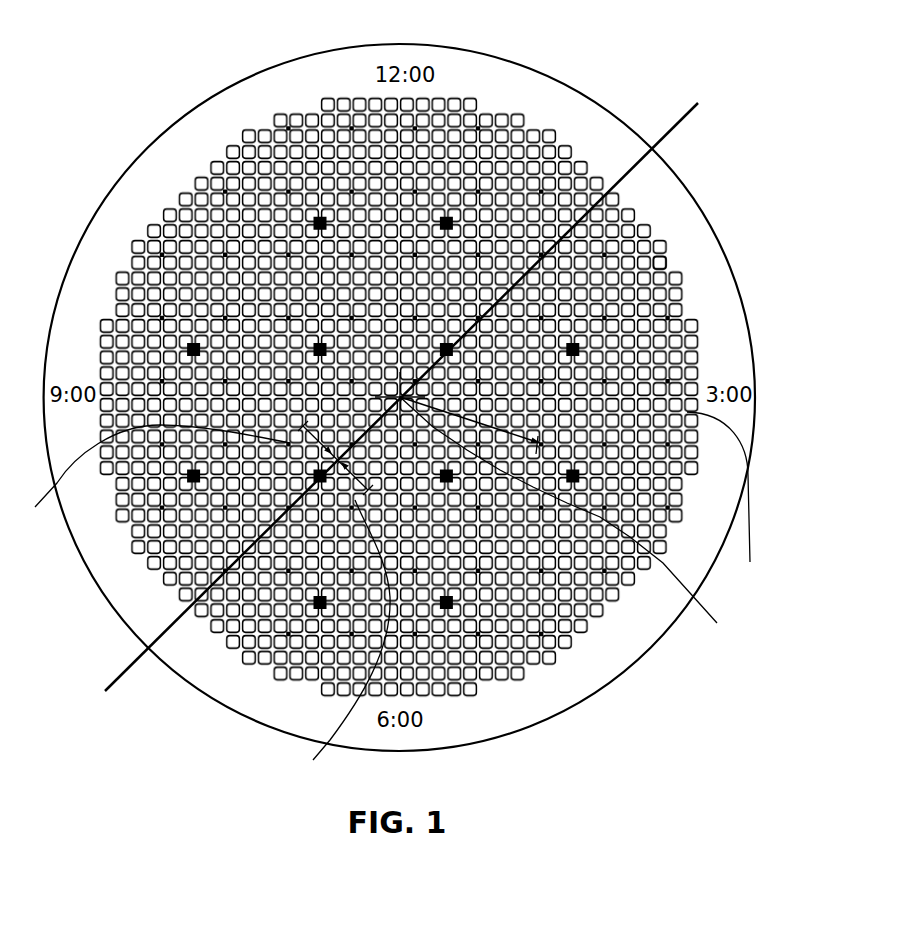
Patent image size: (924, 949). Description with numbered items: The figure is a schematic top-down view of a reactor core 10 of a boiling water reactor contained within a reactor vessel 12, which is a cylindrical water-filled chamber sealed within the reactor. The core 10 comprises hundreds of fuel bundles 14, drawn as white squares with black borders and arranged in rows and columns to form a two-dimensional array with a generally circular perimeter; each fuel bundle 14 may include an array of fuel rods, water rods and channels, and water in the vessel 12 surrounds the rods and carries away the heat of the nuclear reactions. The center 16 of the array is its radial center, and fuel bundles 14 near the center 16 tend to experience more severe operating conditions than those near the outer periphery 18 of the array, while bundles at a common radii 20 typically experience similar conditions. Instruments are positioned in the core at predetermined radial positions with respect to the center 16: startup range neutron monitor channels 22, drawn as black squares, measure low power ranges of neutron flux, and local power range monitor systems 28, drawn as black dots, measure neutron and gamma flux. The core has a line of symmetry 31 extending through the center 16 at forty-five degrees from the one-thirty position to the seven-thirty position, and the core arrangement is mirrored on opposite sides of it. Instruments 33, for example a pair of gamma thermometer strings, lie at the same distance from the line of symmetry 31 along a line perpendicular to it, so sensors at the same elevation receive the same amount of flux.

The reactor core 10 is at (653, 220).
The reactor vessel 12 is at (532, 65).
The fuel bundle 14 is at (663, 262).
The center 16 is at (572, 523).
The outer periphery 18 is at (722, 498).
The common radii 20 is at (540, 443).
The startup range neutron monitor (SRNM) channel 22 is at (313, 605).
The local power range monitor (LPRM) system 28 is at (284, 634).
The line of symmetry 31 is at (677, 118).
The instruments 33 is at (202, 604).